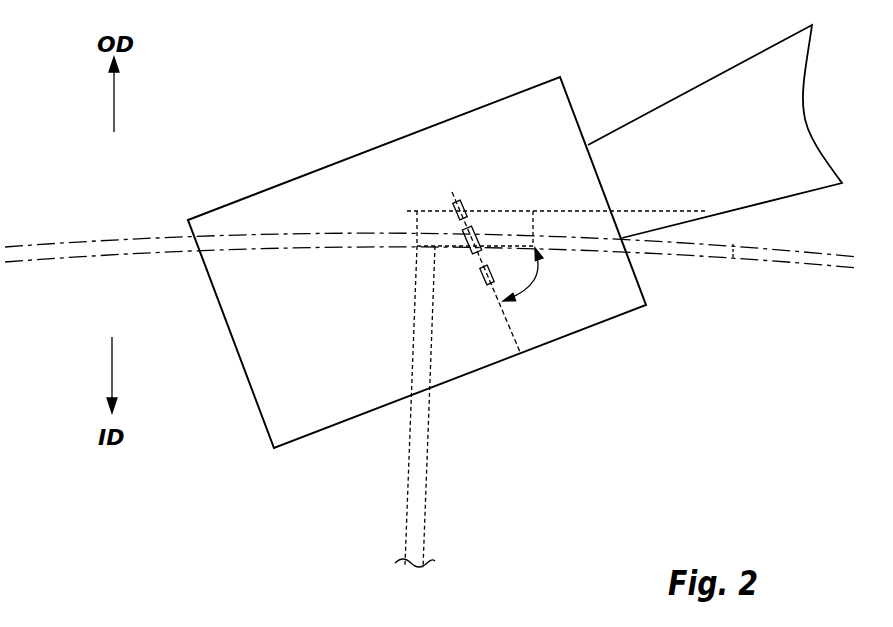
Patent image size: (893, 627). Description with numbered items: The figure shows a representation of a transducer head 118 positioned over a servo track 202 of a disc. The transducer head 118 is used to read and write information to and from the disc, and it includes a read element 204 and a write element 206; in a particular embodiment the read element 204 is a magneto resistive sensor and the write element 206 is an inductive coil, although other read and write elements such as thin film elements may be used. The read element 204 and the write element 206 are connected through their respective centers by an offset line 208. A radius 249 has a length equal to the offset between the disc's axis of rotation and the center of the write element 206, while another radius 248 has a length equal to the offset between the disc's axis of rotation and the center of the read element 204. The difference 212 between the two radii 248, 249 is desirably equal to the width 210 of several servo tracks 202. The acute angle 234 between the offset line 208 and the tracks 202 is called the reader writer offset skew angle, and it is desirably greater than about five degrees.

The transducer head 118 is at (417, 262).
The servo track 202 is at (163, 247).
The read element 204 is at (456, 201).
The write element 206 is at (470, 254).
The offset line 208 is at (533, 346).
The width of several servo tracks 210 is at (733, 247).
The difference between the two radii 212 is at (533, 227).
The acute angle 234 is at (534, 275).
The radius 248 is at (406, 500).
The radius 249 is at (428, 425).